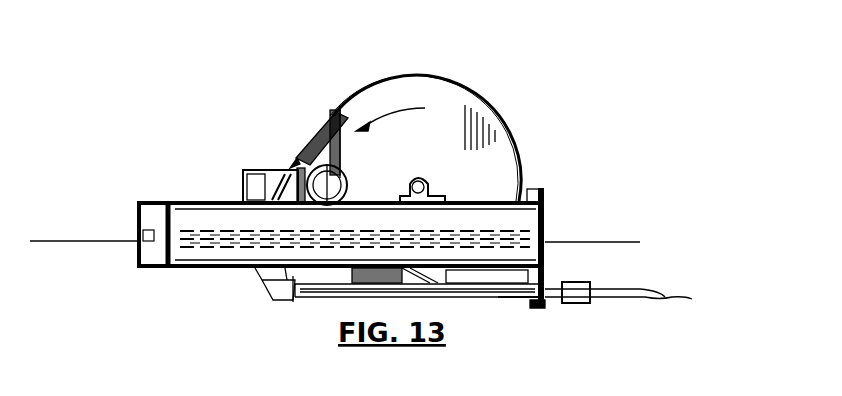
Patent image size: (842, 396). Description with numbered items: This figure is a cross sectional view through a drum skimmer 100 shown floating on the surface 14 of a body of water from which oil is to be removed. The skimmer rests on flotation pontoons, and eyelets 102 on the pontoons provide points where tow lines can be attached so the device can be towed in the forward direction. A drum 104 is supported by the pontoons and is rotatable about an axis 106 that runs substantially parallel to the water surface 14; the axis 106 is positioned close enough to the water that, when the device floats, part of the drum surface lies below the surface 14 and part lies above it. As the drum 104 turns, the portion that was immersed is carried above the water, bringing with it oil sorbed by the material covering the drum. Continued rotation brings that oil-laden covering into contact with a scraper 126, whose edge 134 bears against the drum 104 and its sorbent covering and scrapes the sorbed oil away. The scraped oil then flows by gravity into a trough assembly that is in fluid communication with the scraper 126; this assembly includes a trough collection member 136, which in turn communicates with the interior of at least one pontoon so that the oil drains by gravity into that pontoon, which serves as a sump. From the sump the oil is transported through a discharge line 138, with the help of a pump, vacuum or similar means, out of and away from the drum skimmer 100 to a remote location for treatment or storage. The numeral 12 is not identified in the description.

The drum skimmer 100 is at (152, 62).
The eyelets 102 is at (137, 210).
The top plate 12 is at (200, 203).
The water surface 14 is at (80, 241).
The drum 104 is at (505, 193).
The axis of rotation 106 is at (445, 166).
The scraper 126 is at (333, 212).
The scraper edge 134 is at (312, 150).
The trough collection member 136 is at (245, 176).
The discharge line 138 is at (512, 298).